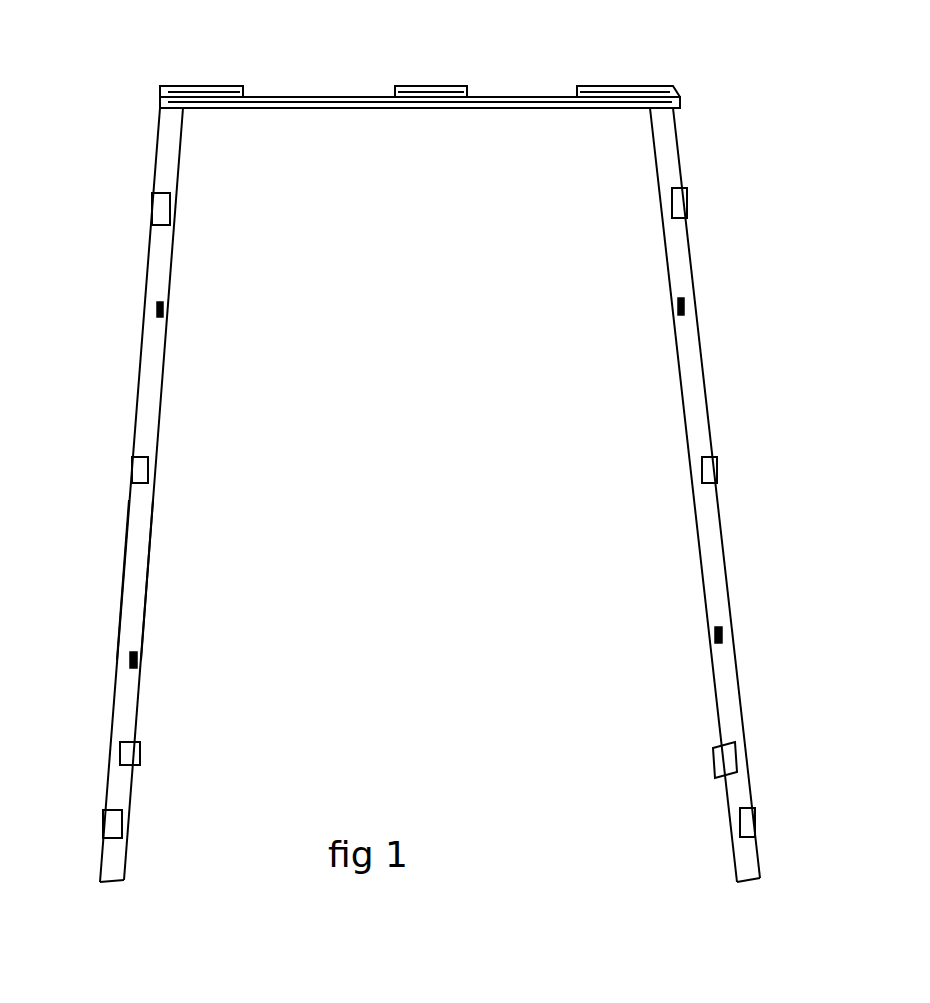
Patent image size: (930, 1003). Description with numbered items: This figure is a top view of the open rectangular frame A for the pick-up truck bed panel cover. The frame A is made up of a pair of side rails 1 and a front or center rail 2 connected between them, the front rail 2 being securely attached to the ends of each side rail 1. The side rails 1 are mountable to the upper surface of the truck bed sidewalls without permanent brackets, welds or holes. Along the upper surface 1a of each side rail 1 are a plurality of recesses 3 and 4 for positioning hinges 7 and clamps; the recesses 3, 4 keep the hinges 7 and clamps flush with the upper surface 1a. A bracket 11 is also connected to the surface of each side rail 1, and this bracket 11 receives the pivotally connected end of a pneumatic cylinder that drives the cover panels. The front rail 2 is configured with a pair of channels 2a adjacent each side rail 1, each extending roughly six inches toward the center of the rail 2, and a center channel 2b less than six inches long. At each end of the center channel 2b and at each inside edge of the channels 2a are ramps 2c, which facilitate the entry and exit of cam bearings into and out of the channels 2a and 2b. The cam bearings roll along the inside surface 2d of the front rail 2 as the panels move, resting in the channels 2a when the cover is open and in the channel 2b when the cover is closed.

The side rail 1 is at (153, 383).
The upper surface 1a is at (138, 580).
The front rail 2 is at (545, 97).
The channels 2a is at (233, 97).
The center channel 2b is at (420, 100).
The ramps 2c is at (247, 85).
The inside surface 2d is at (677, 88).
The recesses 3 is at (160, 203).
The recesses 4 is at (167, 303).
The hinges 7 is at (148, 463).
The bracket 11 is at (130, 745).
The open rectangular frame A is at (712, 262).